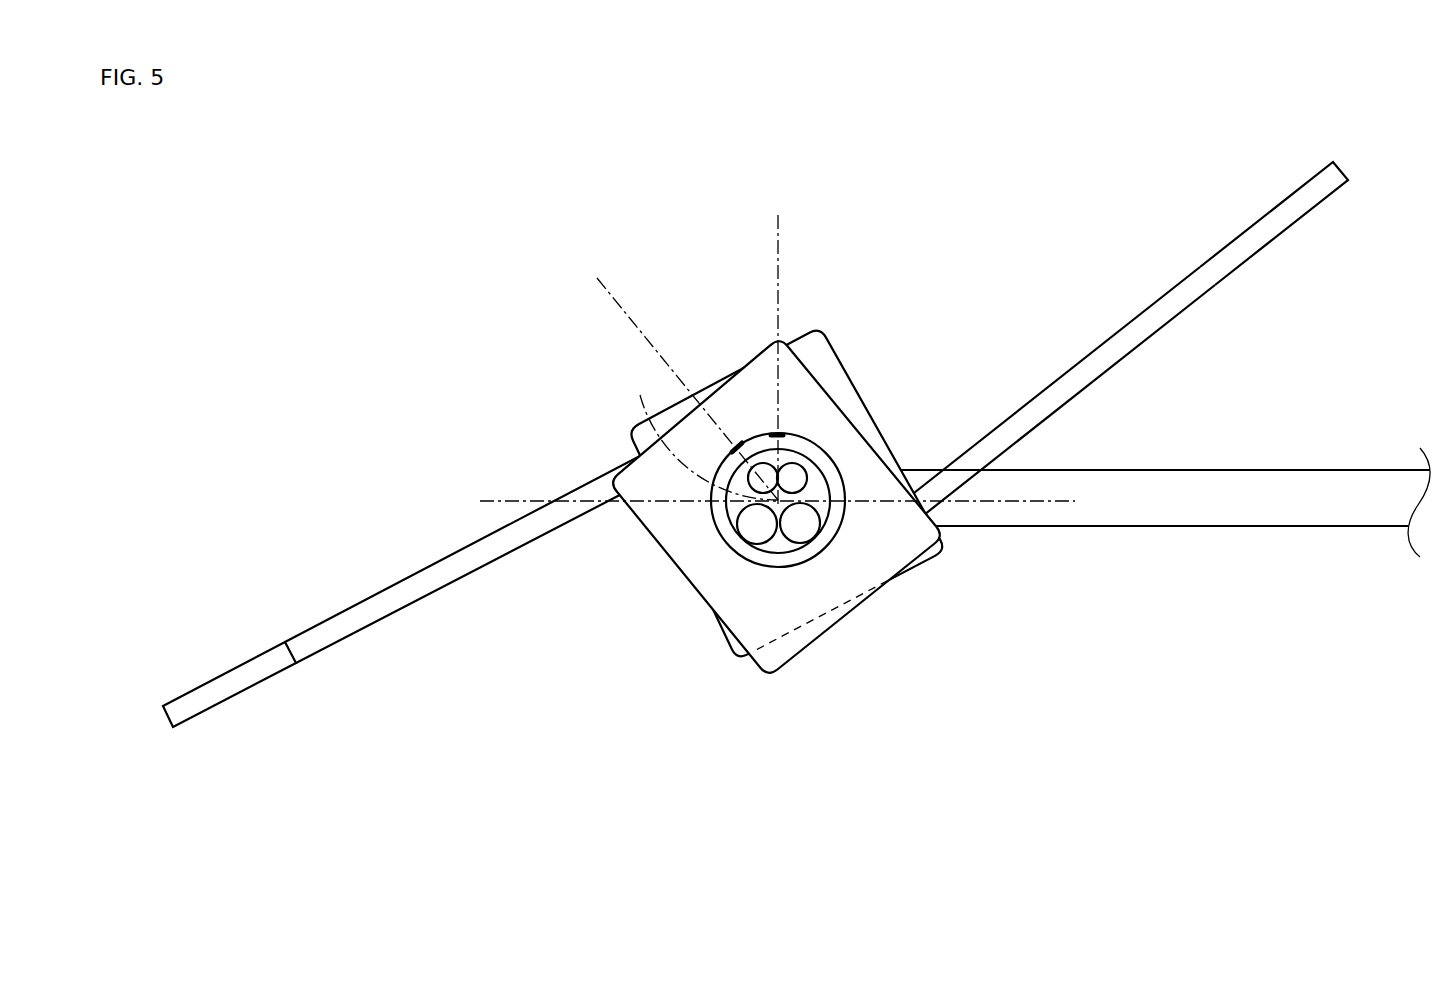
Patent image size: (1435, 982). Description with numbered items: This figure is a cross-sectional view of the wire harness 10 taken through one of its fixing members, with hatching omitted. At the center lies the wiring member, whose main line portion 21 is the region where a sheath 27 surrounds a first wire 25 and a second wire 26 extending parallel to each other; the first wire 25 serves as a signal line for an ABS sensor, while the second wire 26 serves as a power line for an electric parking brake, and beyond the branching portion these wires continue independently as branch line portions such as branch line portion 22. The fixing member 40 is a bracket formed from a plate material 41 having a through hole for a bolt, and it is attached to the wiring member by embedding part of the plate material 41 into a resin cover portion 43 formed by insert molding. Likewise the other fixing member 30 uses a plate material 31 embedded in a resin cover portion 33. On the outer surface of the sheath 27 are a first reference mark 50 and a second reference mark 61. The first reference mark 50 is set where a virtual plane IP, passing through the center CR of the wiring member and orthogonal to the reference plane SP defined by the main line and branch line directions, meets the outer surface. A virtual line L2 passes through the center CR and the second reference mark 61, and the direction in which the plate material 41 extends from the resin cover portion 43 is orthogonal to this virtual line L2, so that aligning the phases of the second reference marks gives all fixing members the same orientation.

The wire harness 10 is at (1062, 222).
The main line portion 21 is at (712, 547).
The branch line portion 22 is at (1209, 470).
The first wire 25 is at (766, 478).
The second wire 26 is at (797, 530).
The sheath 27 is at (820, 553).
The fixing member 30 is at (363, 627).
The plate material 31 is at (456, 553).
The resin cover portion 33 is at (825, 345).
The fixing member 40 is at (1268, 245).
The plate material 41 is at (1156, 303).
The resin cover portion 43 is at (778, 662).
The first reference mark 50 is at (780, 434).
The second reference mark 61 is at (737, 446).
The virtual plane IP is at (782, 268).
The virtual line L2 is at (635, 312).
The center CR is at (698, 433).
The reference plane SP is at (1027, 508).